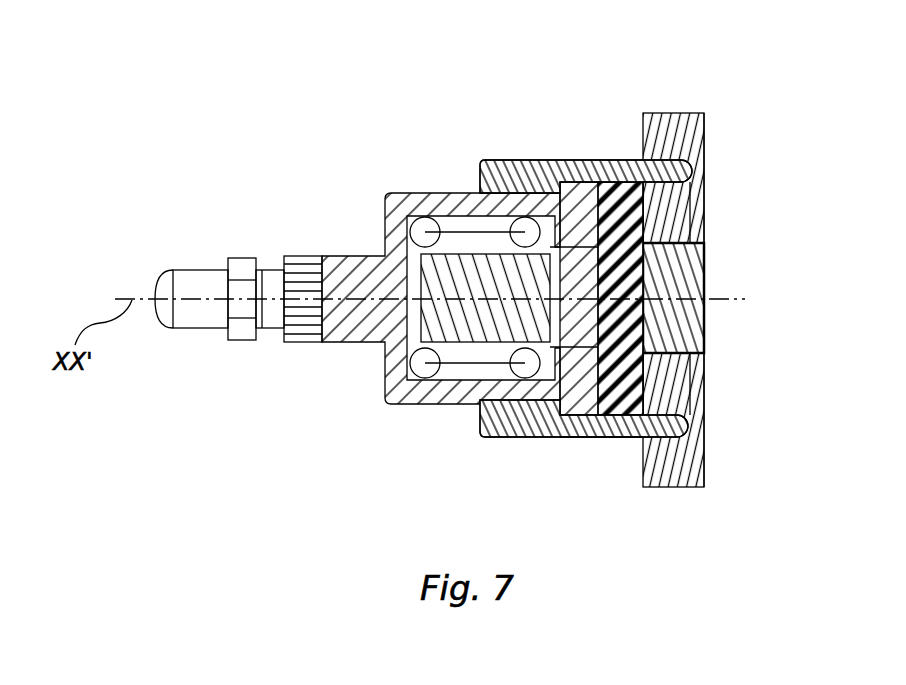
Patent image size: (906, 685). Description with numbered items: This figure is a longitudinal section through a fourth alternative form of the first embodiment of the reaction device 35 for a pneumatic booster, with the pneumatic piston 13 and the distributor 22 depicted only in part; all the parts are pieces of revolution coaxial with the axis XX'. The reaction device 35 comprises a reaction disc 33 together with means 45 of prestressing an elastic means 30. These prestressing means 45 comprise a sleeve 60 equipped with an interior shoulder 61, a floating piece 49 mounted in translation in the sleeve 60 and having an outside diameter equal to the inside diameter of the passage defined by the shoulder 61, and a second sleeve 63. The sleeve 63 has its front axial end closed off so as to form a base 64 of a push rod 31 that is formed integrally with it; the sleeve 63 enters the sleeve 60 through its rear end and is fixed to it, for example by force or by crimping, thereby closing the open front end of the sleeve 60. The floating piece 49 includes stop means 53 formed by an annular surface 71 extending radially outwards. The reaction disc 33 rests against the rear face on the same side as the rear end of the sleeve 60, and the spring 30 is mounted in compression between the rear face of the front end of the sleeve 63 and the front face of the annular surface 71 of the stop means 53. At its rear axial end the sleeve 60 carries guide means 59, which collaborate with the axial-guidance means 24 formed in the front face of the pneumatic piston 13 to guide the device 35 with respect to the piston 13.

The pneumatic piston 13 is at (699, 113).
The distributor 22 is at (678, 295).
The axial-guidance means 24 is at (694, 144).
The elastic means 30 is at (443, 244).
The push rod 31 is at (207, 313).
The reaction disc 33 is at (623, 160).
The reaction device 35 is at (398, 158).
The means of prestressing 45 is at (377, 317).
The floating piece 49 is at (466, 268).
The stop means 53 is at (518, 438).
The guide means 59 is at (657, 143).
The sleeve 60 is at (540, 279).
The interior shoulder 61 is at (560, 440).
The sleeve 63 is at (390, 194).
The base 64 is at (385, 398).
The annular surface 71 is at (603, 443).